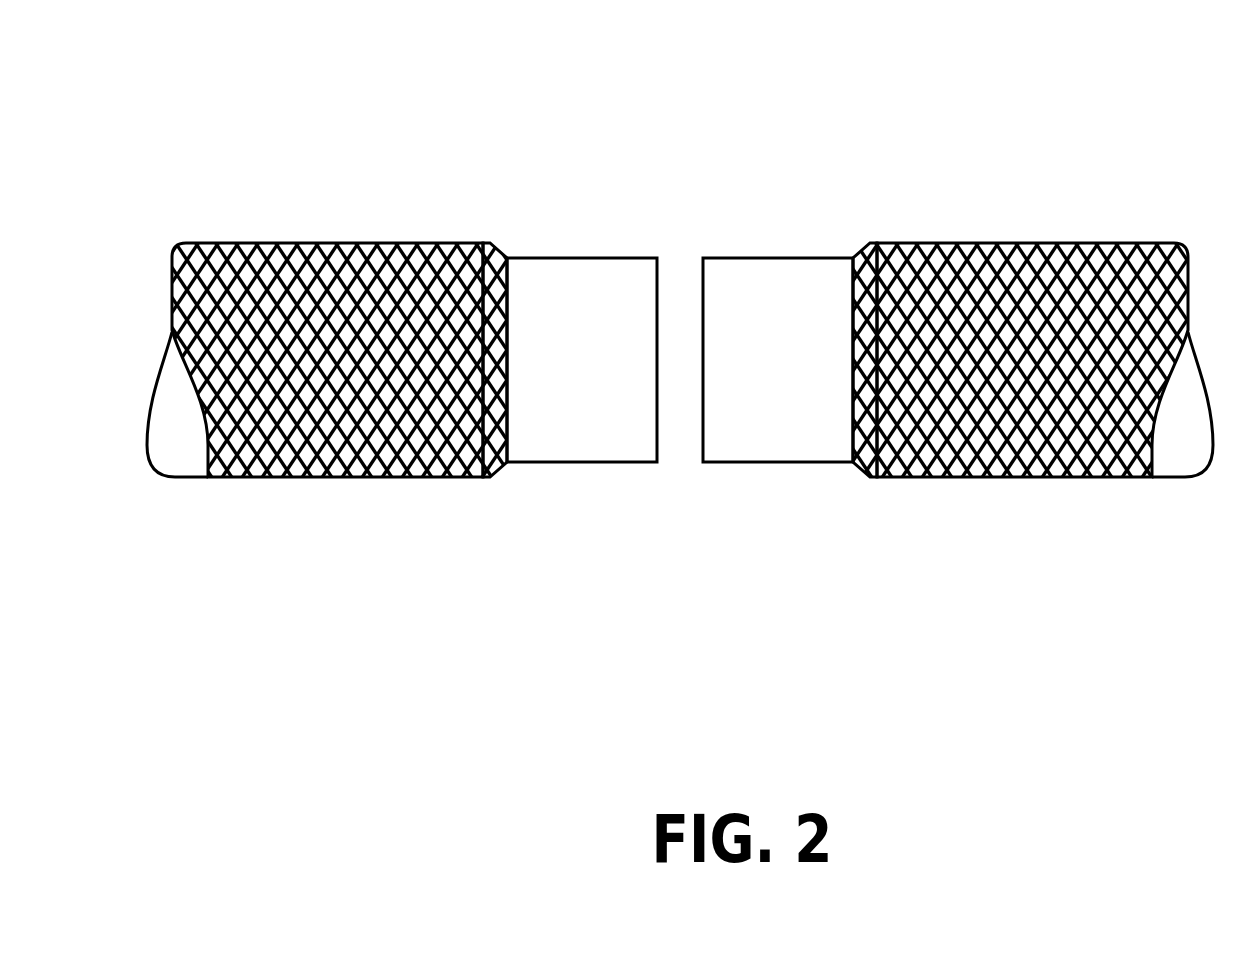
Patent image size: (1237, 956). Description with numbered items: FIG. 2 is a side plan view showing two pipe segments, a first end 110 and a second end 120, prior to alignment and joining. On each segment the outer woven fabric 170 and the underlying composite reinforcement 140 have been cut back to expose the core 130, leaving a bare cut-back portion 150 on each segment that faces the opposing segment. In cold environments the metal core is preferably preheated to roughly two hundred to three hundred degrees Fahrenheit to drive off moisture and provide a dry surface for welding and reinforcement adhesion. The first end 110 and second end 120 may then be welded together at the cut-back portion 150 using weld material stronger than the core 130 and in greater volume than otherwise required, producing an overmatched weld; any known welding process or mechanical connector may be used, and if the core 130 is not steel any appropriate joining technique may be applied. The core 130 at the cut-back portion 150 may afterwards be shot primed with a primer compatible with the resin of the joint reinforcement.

The first end 110 is at (652, 84).
The second end 120 is at (1142, 85).
The core 130 is at (598, 275).
The composite reinforcement 140 is at (493, 245).
The cut-back portion 150 is at (487, 520).
The woven fabric 170 is at (331, 243).